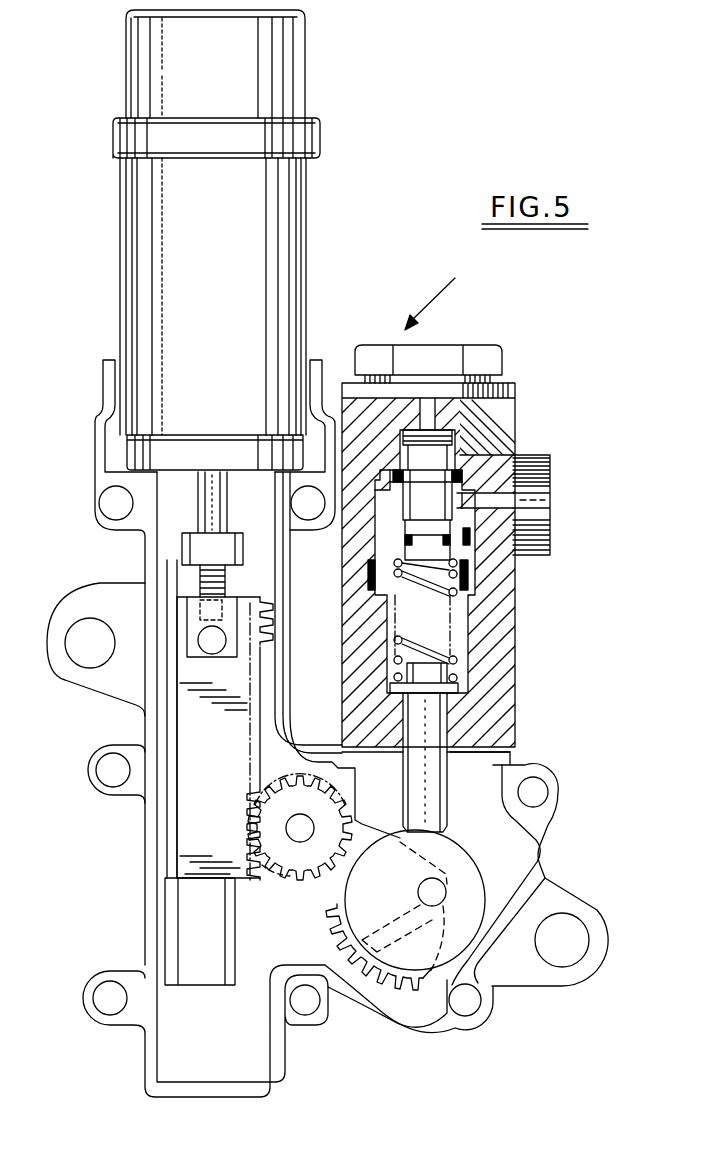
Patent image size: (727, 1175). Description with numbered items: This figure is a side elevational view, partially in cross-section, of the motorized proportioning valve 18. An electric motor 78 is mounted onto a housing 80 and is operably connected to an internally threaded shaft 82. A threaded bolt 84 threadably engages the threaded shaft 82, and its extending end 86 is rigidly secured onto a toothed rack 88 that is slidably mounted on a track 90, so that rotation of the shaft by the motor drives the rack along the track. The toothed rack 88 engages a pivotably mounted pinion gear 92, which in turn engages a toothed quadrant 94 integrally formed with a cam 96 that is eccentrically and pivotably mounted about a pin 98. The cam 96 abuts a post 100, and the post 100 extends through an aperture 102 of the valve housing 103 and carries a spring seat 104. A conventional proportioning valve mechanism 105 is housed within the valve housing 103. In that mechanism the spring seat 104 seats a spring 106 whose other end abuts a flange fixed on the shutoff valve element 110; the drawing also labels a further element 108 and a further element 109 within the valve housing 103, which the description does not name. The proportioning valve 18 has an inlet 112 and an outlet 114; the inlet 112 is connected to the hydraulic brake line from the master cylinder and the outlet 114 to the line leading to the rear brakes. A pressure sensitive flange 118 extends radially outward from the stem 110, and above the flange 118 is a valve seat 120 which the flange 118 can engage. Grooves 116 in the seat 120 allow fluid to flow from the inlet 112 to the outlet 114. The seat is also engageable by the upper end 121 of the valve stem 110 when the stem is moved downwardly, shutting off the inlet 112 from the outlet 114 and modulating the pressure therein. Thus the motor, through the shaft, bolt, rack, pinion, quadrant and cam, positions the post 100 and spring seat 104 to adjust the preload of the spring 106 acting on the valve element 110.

The motorized proportioning valve 18 is at (433, 292).
The electric motor 78 is at (307, 290).
The housing 80 is at (100, 470).
The internally threaded shaft 82 is at (222, 516).
The threaded bolt 84 is at (203, 593).
The extending end 86 is at (213, 614).
The toothed rack 88 is at (203, 775).
The track 90 is at (193, 923).
The pinion gear 92 is at (297, 856).
The toothed quadrant 94 is at (352, 913).
The cam 96 is at (455, 862).
The pin 98 is at (447, 882).
The post 100 is at (447, 806).
The aperture 102 is at (497, 741).
The valve housing 103 is at (503, 715).
The spring seat 104 is at (458, 688).
The proportioning valve mechanism 105 is at (515, 555).
The spring 106 is at (456, 663).
The seal 108 is at (470, 588).
The seal 109 is at (472, 536).
The shutoff valve element 110 is at (480, 443).
The inlet 112 is at (505, 504).
The outlet 114 is at (432, 398).
The grooves 116 is at (520, 479).
The pressure sensitive flange 118 is at (488, 493).
The valve seat 120 is at (485, 450).
The upper end 121 is at (515, 432).